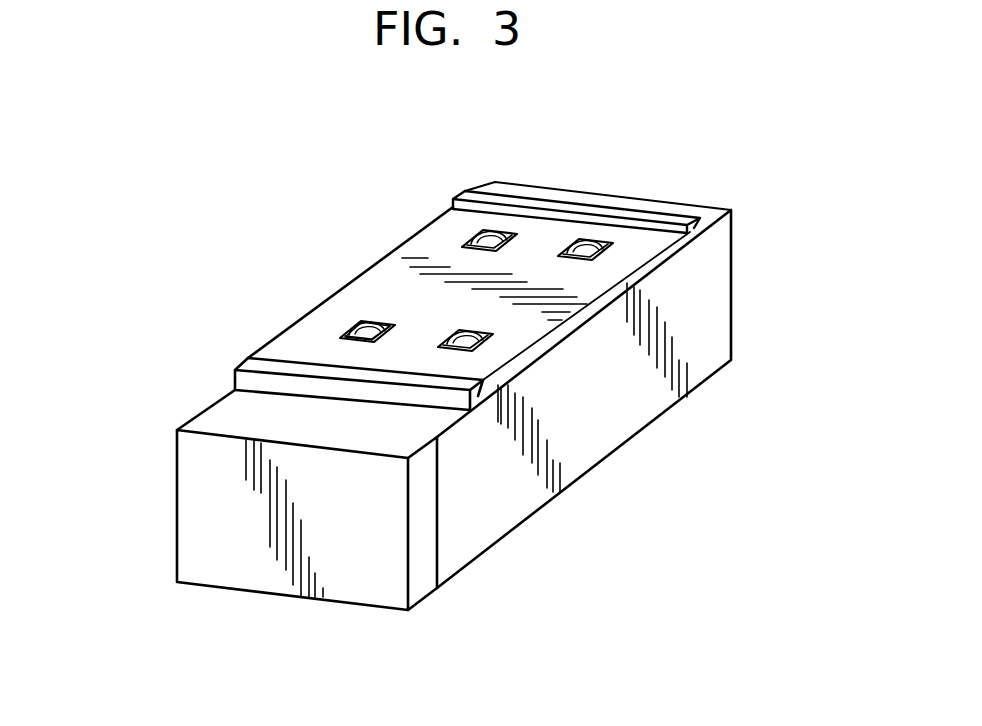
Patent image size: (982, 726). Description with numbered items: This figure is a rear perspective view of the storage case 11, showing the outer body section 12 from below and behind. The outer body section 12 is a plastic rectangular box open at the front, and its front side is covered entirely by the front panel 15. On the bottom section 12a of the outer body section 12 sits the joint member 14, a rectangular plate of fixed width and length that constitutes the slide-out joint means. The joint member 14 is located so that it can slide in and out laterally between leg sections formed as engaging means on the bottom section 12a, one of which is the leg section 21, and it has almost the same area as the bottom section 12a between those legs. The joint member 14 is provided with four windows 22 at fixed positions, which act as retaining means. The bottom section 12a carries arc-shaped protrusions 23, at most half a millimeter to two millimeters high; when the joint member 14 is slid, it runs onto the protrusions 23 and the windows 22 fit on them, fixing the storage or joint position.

The storage case 11 is at (458, 361).
The outer body section 12 is at (592, 407).
The bottom section 12a is at (238, 410).
The joint member 14 is at (428, 250).
The front panel 15 is at (203, 522).
The leg section 21 is at (482, 197).
The windows 22 is at (599, 243).
The protrusions 23 is at (362, 325).